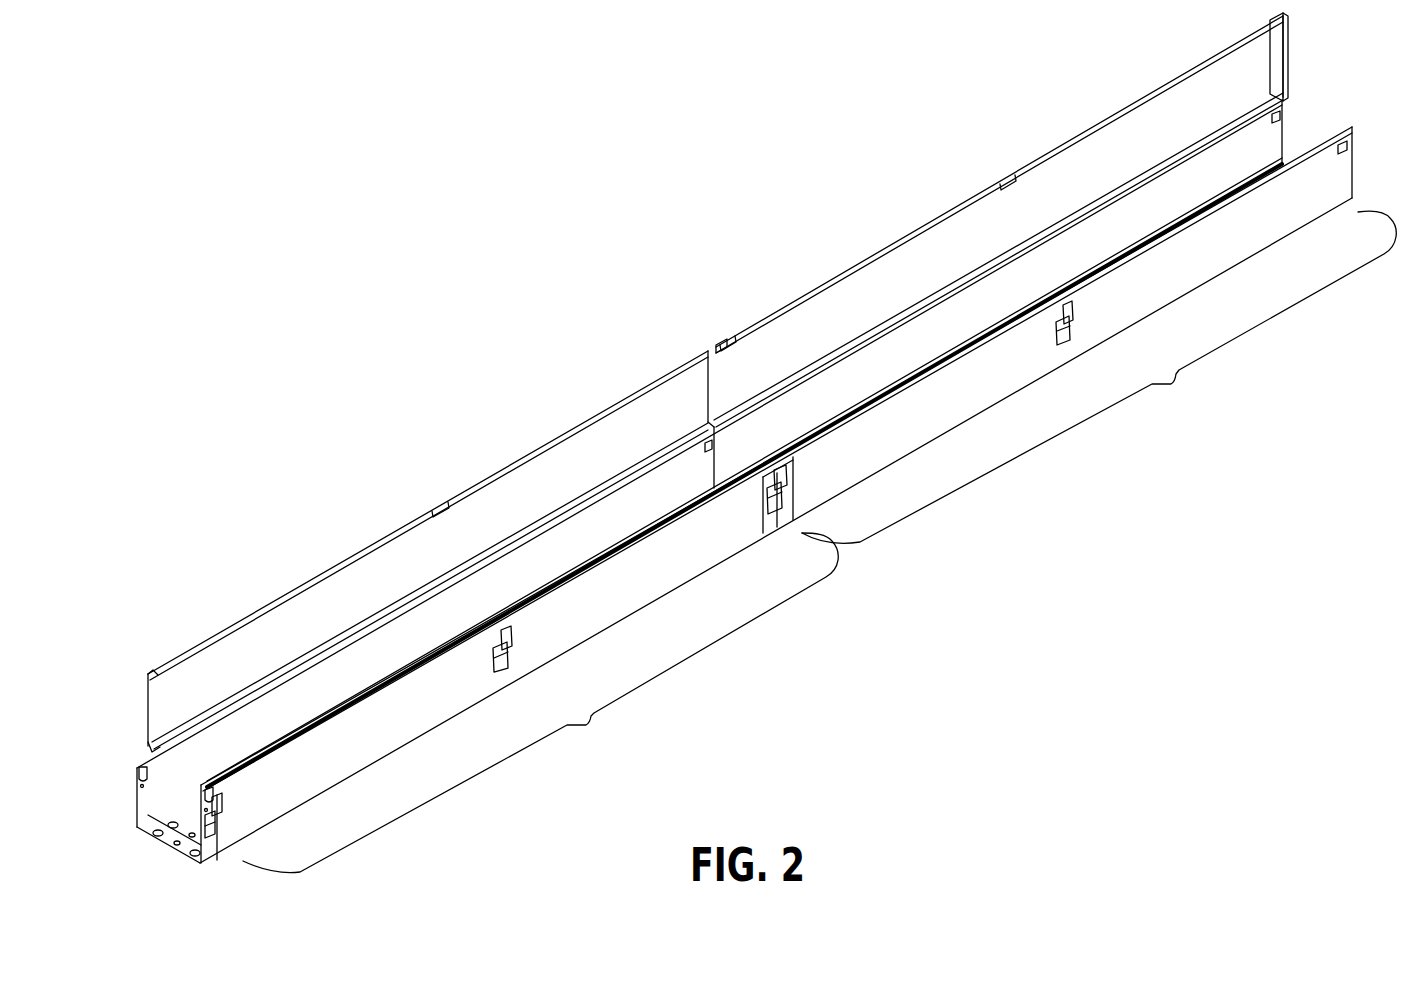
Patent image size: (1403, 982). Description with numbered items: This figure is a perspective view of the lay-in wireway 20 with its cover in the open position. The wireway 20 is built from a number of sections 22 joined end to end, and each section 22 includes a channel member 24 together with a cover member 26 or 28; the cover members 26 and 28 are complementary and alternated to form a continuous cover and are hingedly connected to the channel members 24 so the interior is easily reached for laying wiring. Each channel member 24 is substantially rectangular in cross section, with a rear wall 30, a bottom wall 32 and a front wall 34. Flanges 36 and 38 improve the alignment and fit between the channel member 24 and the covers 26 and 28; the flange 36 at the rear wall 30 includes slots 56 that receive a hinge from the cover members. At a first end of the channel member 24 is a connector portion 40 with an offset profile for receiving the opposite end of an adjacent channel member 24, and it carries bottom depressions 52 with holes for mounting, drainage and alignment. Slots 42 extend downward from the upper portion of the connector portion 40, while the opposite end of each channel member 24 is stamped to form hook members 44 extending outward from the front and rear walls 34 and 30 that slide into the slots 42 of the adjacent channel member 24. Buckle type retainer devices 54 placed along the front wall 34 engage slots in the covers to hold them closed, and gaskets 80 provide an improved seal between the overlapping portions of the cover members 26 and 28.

The lay-in wireway 20 is at (748, 457).
The sections 22 is at (589, 724).
The channel member 24 is at (468, 697).
The cover member 26 is at (583, 436).
The cover member 28 is at (843, 285).
The rear wall 30 is at (318, 716).
The bottom wall 32 is at (175, 822).
The front wall 34 is at (438, 719).
The flange 36 is at (155, 745).
The flange 38 is at (303, 736).
The connector portion 40 is at (222, 858).
The slots 42 is at (142, 767).
The hook members 44 is at (1281, 118).
The bottom depressions 52 is at (195, 856).
The buckle type retainer device 54 is at (513, 633).
The slots 56 is at (223, 818).
The gaskets 80 is at (1284, 52).